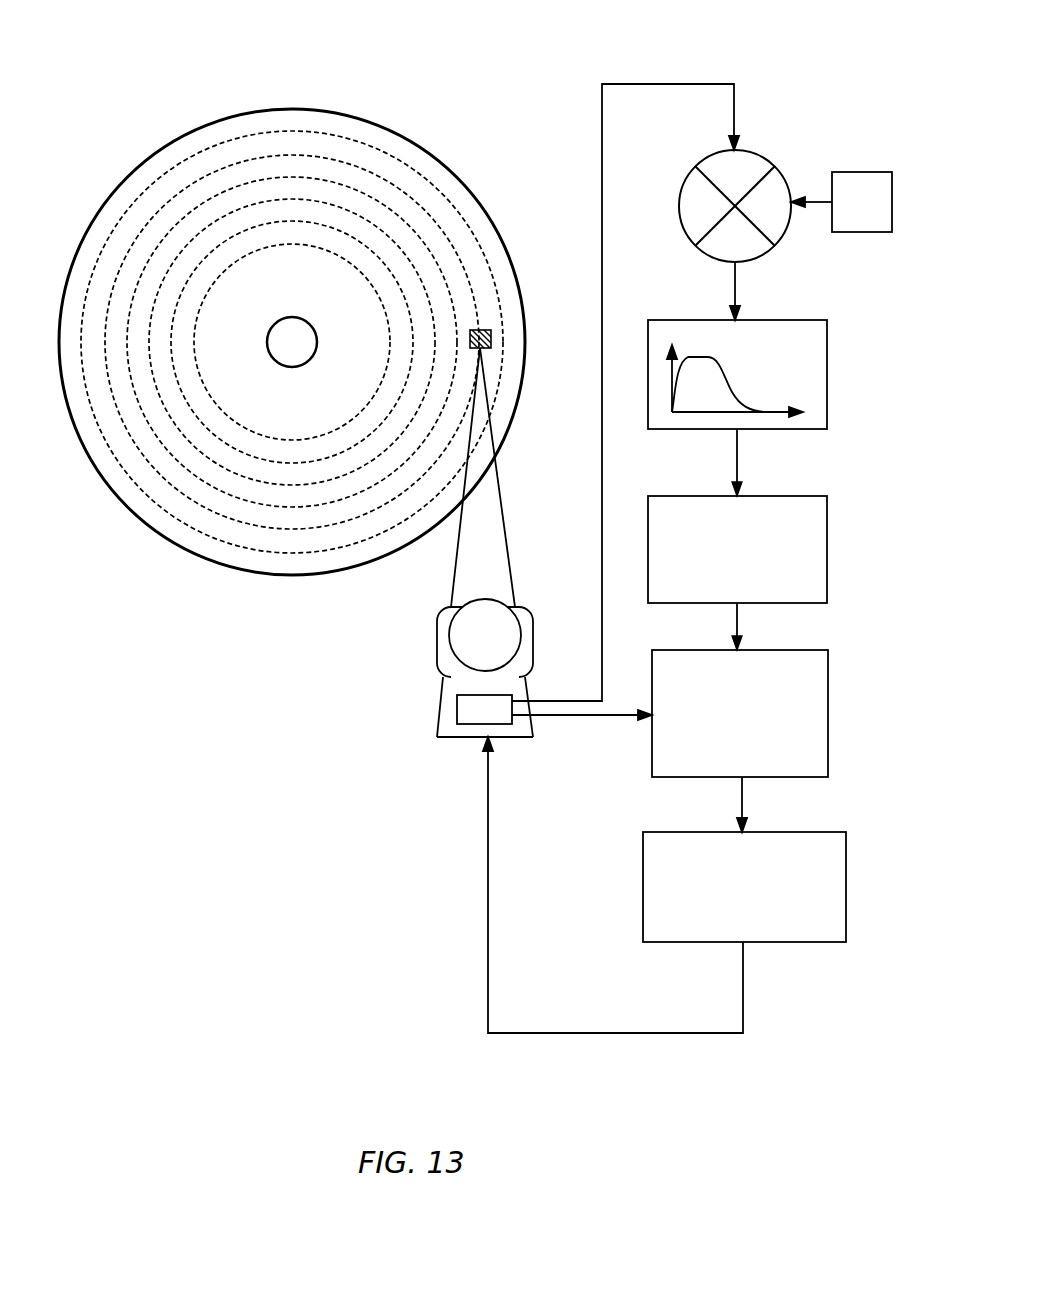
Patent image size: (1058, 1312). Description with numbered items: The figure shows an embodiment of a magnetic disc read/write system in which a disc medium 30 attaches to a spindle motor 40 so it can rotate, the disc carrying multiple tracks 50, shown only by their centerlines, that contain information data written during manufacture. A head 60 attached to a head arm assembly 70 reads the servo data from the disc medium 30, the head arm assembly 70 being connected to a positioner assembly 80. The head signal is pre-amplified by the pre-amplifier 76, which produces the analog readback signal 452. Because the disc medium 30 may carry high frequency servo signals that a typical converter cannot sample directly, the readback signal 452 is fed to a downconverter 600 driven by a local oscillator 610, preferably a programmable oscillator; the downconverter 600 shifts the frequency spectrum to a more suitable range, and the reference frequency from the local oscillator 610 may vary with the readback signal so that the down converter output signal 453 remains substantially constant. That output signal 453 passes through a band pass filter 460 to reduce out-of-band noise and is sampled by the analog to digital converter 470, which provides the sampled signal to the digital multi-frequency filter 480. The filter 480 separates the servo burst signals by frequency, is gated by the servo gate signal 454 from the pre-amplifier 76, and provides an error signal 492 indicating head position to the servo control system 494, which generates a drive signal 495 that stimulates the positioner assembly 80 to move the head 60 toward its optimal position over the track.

The disc medium 30 is at (493, 232).
The spindle motor 40 is at (303, 337).
The tracks 50 is at (203, 354).
The head 60 is at (490, 332).
The head arm assembly 70 is at (497, 495).
The pre-amplifier 76 is at (458, 713).
The positioner assembly 80 is at (437, 642).
The analog readback signal 452 is at (672, 82).
The down converter output signal 453 is at (733, 288).
The servo gate signal 454 is at (572, 717).
The band pass filter 460 is at (807, 318).
The analog to digital converter 470 is at (828, 522).
The digital multi-frequency filter 480 is at (812, 685).
The error signal 492 is at (742, 787).
The servo control system 494 is at (677, 943).
The drive signal 495 is at (487, 825).
The downconverter 600 is at (707, 165).
The local oscillator 610 is at (863, 173).